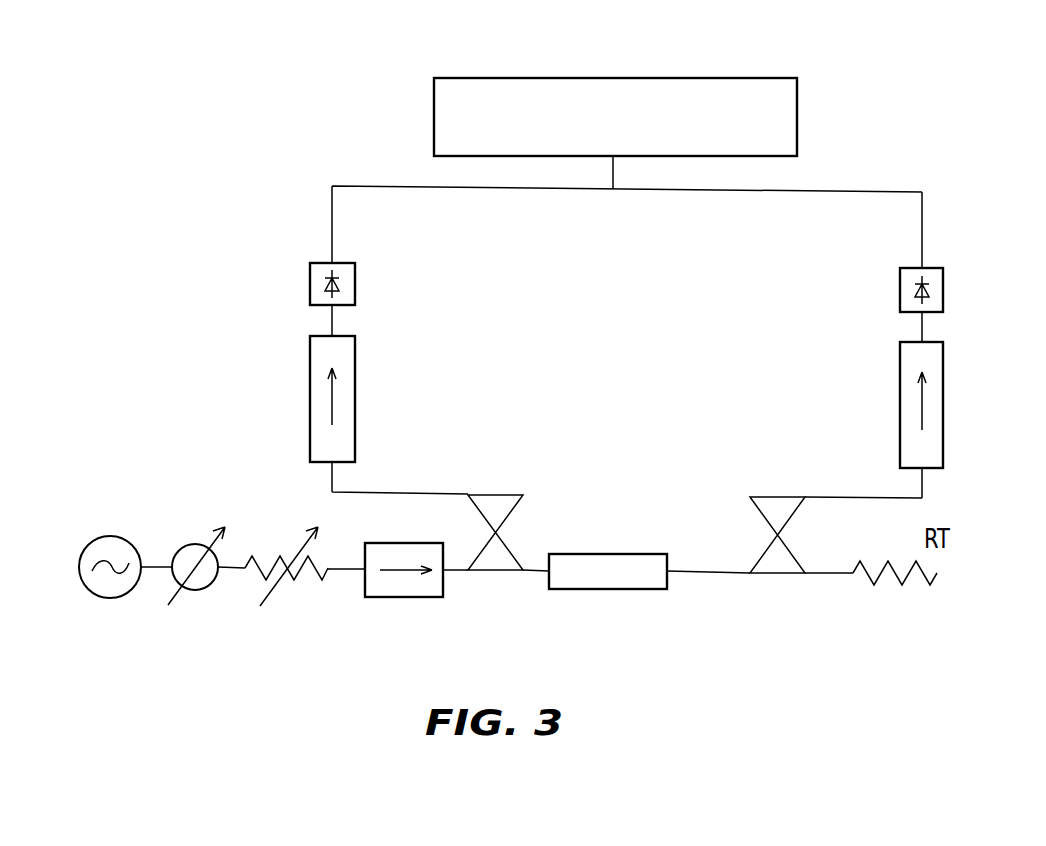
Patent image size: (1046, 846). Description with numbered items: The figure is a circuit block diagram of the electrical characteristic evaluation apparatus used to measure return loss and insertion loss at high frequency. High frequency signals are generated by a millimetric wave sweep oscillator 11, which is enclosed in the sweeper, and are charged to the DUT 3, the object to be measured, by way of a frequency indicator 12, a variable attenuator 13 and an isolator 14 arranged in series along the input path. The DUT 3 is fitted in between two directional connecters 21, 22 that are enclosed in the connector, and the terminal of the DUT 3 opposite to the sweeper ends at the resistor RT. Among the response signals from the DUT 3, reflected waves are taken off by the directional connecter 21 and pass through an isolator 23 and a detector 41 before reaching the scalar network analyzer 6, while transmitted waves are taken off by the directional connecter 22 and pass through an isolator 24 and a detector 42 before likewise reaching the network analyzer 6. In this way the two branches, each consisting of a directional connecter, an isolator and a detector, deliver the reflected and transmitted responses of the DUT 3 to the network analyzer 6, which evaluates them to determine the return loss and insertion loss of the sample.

The DUT 3 is at (627, 592).
The scalar network analyzer 6 is at (681, 78).
The millimetric wave sweep oscillator 11 is at (113, 604).
The frequency indicator 12 is at (198, 594).
The variable attenuator 13 is at (285, 594).
The isolator 14 is at (405, 600).
The directional connecter 21 is at (524, 514).
The directional connecter 22 is at (777, 577).
The isolator 23 is at (355, 393).
The isolator 24 is at (898, 400).
The detector 41 is at (355, 286).
The detector 42 is at (898, 290).